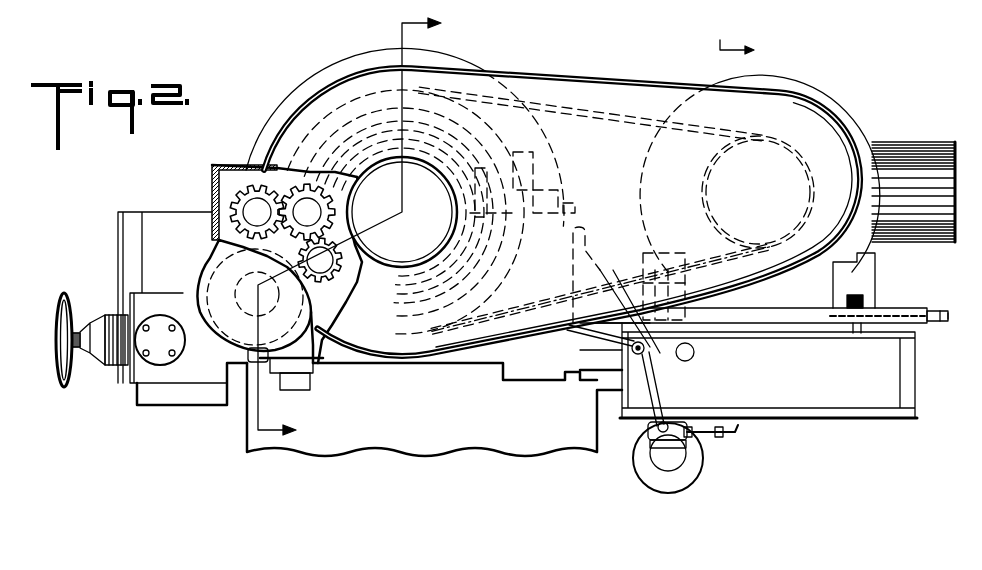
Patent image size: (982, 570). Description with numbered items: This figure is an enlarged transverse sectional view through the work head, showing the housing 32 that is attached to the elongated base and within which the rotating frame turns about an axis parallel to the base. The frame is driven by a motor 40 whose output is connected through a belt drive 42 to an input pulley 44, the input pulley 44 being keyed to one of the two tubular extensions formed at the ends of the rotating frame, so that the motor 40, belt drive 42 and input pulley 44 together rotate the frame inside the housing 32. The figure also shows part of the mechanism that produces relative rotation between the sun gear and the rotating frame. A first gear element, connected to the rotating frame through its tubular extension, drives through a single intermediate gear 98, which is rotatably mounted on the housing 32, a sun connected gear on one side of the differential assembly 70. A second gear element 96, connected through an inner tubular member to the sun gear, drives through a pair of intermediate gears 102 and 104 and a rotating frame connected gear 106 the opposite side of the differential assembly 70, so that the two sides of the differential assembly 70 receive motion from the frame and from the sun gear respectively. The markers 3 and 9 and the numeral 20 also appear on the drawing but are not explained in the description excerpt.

The exercise apparatus 20 is at (783, 2).
The housing 32 is at (565, 380).
The motor 40 is at (845, 125).
The belt drive 42 is at (593, 115).
The input pulley 44 is at (347, 105).
The differential assembly 70 is at (176, 404).
The second gear element 96 is at (350, 272).
The single intermediate gear 98 is at (342, 262).
The intermediate gear 102 is at (270, 170).
The intermediate gear 104 is at (210, 182).
The rotating frame connected gear 106 is at (200, 208).
The section line 3- 3 is at (357, 228).
The view direction 9 is at (746, 52).